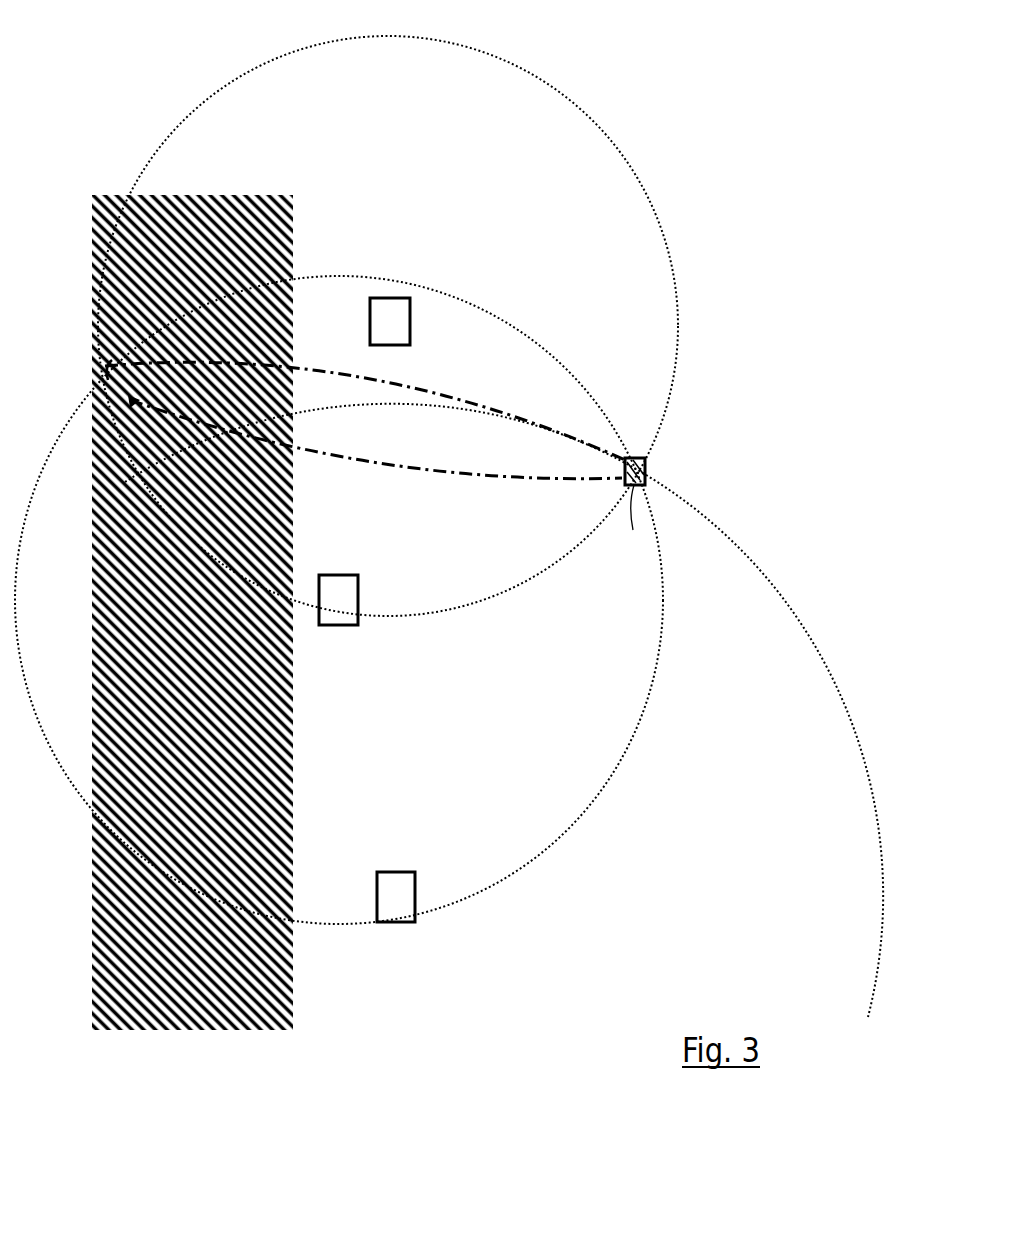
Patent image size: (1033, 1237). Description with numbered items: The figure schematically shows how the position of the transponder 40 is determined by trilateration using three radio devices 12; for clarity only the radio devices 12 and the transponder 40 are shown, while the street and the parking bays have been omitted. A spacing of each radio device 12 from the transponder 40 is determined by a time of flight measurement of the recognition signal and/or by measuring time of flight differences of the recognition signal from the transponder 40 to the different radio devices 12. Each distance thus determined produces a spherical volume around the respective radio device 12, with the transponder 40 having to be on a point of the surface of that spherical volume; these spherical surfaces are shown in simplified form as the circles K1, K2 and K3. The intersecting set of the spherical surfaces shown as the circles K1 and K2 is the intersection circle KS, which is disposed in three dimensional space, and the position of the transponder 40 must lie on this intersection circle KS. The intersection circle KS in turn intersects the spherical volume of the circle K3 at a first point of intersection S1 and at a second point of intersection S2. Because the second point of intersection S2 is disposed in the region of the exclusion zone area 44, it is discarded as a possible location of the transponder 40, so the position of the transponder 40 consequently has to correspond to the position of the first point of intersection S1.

The radio device 12 is at (402, 337).
The transponder 40 is at (646, 464).
The exclusion zone area 44 is at (250, 212).
The circle K1 is at (482, 52).
The circle K2 is at (660, 644).
The circle K3 is at (848, 718).
The intersection circle KS is at (428, 388).
The first point of intersection S1 is at (628, 532).
The second point of intersection S2 is at (221, 432).